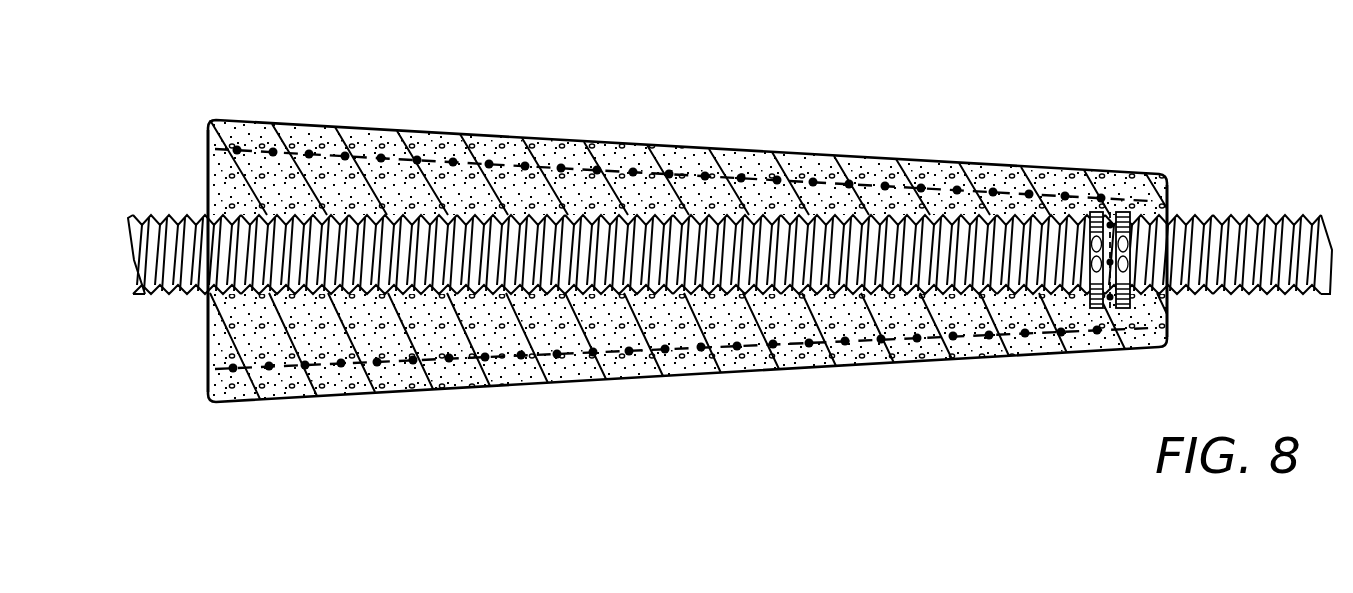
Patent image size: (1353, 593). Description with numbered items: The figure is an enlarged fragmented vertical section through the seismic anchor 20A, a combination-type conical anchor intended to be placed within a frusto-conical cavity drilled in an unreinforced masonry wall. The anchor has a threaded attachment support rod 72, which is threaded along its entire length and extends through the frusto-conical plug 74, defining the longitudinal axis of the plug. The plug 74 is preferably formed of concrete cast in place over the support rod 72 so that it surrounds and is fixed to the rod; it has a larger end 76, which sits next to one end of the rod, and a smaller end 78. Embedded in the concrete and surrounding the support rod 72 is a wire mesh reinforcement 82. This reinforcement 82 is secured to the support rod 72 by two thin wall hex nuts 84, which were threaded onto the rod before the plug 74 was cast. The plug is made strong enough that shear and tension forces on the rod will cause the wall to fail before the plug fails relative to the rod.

The seismic anchor 20A is at (695, 130).
The threaded attachment support rod 72 is at (857, 215).
The frusto-conical plug 74 is at (490, 135).
The larger end 76 is at (208, 387).
The smaller end 78 is at (1168, 325).
The wire mesh reinforcement 82 is at (1073, 196).
The thin wall hex nuts 84 is at (1126, 308).